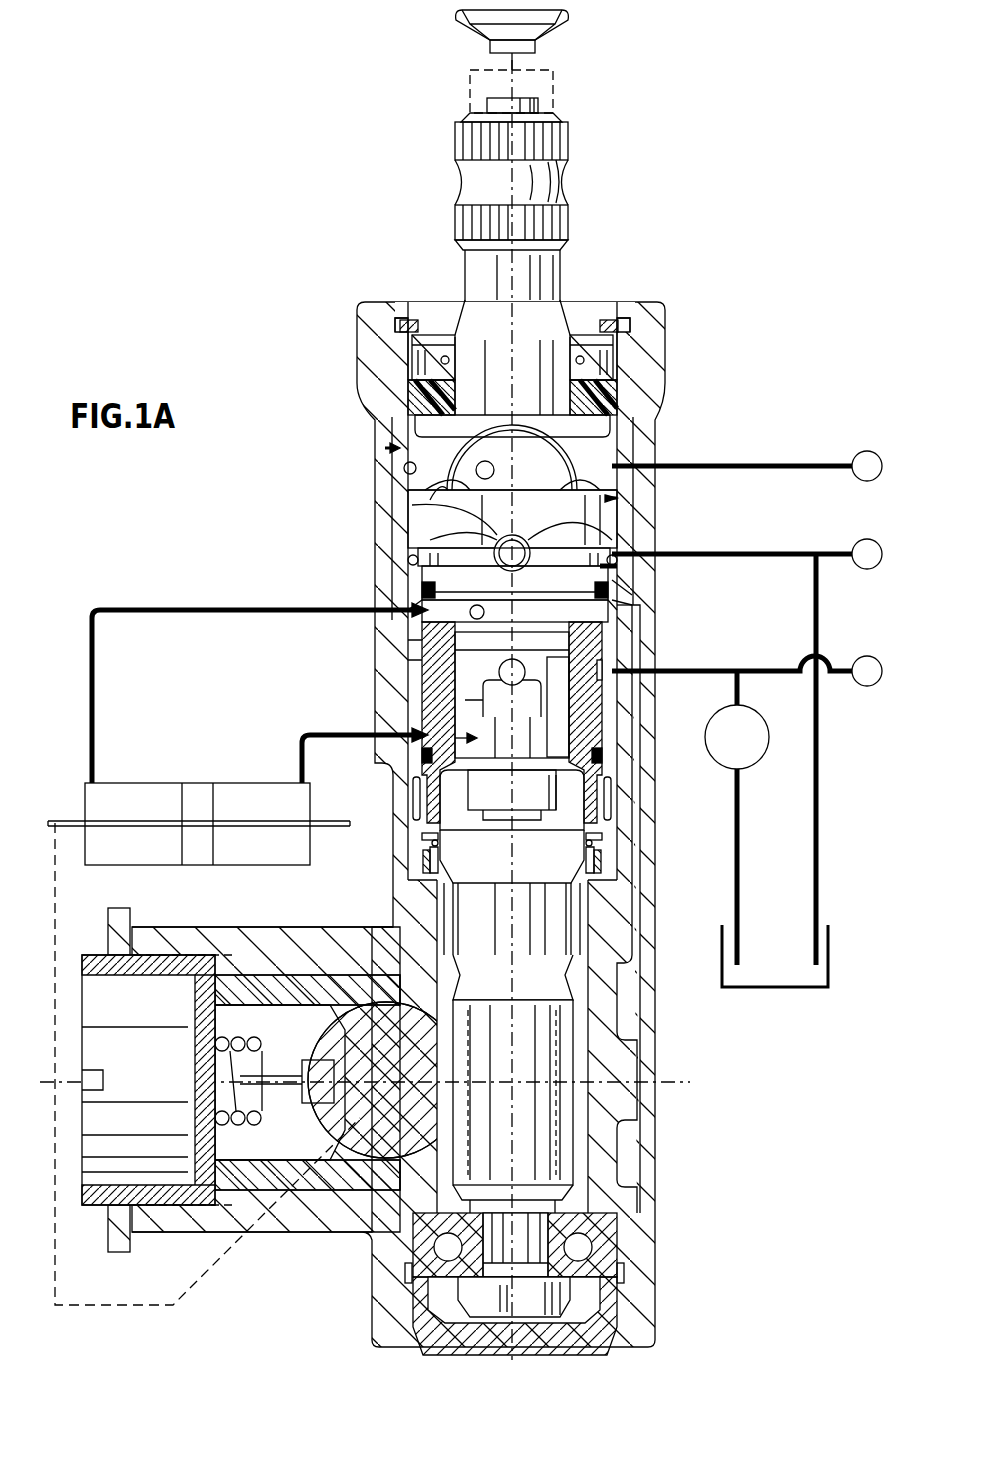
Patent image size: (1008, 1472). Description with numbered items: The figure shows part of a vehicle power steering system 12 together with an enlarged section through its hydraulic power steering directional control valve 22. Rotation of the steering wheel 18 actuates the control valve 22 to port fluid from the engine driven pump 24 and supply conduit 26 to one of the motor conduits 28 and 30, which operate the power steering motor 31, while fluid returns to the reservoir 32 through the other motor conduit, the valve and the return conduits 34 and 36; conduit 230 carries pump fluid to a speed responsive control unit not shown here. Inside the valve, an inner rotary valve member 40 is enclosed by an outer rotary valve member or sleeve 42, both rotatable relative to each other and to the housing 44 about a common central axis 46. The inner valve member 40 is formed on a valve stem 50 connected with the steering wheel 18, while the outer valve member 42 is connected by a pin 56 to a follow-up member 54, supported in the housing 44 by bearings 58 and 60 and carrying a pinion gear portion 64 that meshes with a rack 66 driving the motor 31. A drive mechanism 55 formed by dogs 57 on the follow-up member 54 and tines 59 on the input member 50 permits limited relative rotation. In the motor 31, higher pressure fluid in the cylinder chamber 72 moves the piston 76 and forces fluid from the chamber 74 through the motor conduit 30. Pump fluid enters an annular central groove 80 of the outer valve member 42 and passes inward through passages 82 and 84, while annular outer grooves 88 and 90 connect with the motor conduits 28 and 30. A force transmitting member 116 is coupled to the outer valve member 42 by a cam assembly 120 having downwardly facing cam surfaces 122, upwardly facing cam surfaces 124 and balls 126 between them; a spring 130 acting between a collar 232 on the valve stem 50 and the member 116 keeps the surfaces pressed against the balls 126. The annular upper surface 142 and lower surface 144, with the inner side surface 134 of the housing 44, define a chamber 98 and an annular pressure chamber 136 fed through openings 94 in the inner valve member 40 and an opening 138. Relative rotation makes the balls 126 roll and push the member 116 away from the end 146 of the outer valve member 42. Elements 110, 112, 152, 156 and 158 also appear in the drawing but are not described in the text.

The vehicle power steering system 12 is at (690, 196).
The steering wheel 18 is at (470, 18).
The hydraulic power steering directional control valve 22 is at (340, 337).
The engine driven pump 24 is at (772, 732).
The supply conduit 26 is at (703, 668).
The motor conduit 28 is at (181, 605).
The motor conduit 30 is at (310, 733).
The power steering motor 31 is at (190, 775).
The reservoir 32 is at (748, 990).
The return conduit 34 is at (818, 810).
The return conduit 36 is at (775, 464).
The inner rotary valve member 40 is at (455, 738).
The outer rotary valve member 42 is at (430, 680).
The housing 44 is at (380, 330).
The common central axis 46 is at (512, 80).
The valve stem 50 is at (552, 182).
The follow-up member 54 is at (470, 882).
The drive mechanism 55 is at (540, 848).
The pin 56 is at (416, 830).
The dogs 57 is at (530, 793).
The bearing 58 is at (450, 932).
The tines 59 is at (570, 800).
The bearing 60 is at (585, 1247).
The pinion gear portion 64 is at (575, 1130).
The rack 66 is at (395, 1150).
The motor cylinder chamber 72 is at (120, 860).
The chamber 74 is at (255, 842).
The piston 76 is at (195, 842).
The annular central groove 80 is at (620, 662).
The passage 82 is at (575, 665).
The passage 84 is at (415, 650).
The annular outer groove 88 is at (430, 602).
The annular outer groove 90 is at (425, 745).
The openings 94 is at (506, 683).
The chamber 98 is at (598, 540).
The valve cartridge 110 is at (325, 394).
The port 112 is at (386, 448).
The force transmitting member 116 is at (612, 499).
The cam assembly 120 is at (480, 525).
The cam surfaces 122 is at (512, 530).
The cam surfaces 124 is at (430, 578).
The spherical cam elements 126 is at (524, 548).
The spring 130 is at (420, 422).
The cylindrical inner side surface 134 is at (404, 470).
The annular pressure chamber 136 is at (640, 445).
The opening 138 is at (480, 461).
The annular upper surface 142 is at (430, 493).
The annular lower surface 144 is at (615, 592).
The end of the outer valve member 146 is at (548, 575).
The surface 152 is at (500, 540).
The O-ring 156 is at (610, 375).
The packing 158 is at (612, 345).
The conduit 230 is at (830, 665).
The collar 232 is at (600, 400).